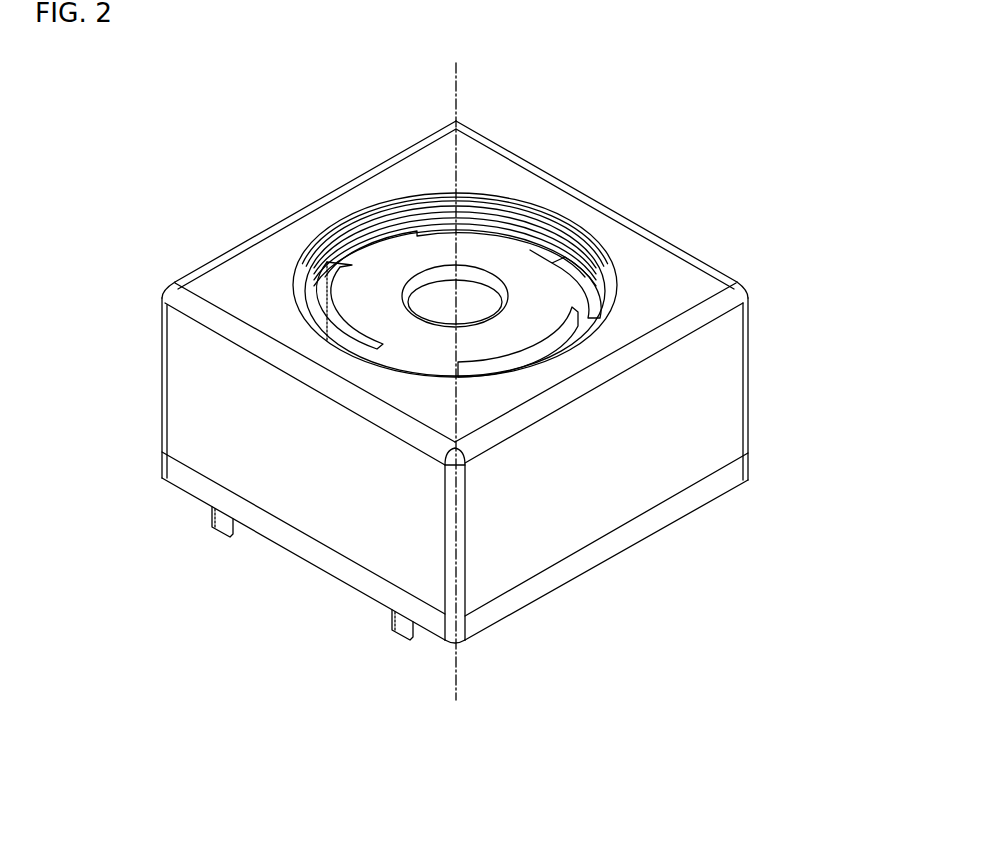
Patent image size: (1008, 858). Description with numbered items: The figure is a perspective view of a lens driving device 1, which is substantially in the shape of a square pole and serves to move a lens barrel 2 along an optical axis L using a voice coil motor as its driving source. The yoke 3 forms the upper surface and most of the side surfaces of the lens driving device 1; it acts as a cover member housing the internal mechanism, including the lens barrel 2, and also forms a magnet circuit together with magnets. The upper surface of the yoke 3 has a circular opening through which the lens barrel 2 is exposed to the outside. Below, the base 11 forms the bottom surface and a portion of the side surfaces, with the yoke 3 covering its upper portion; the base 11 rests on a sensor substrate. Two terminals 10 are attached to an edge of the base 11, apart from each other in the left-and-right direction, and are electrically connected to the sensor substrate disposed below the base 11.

The lens driving device 1 is at (171, 185).
The optical axis L is at (457, 82).
The lens barrel 2 is at (525, 266).
The yoke 3 is at (722, 373).
The base 11 is at (632, 530).
The terminals 10 is at (225, 537).